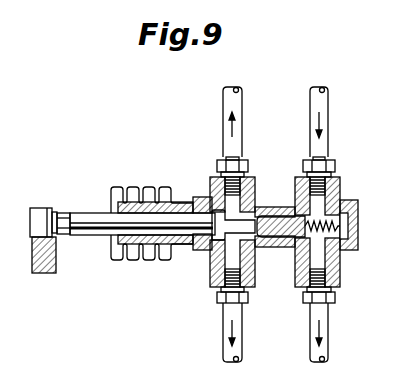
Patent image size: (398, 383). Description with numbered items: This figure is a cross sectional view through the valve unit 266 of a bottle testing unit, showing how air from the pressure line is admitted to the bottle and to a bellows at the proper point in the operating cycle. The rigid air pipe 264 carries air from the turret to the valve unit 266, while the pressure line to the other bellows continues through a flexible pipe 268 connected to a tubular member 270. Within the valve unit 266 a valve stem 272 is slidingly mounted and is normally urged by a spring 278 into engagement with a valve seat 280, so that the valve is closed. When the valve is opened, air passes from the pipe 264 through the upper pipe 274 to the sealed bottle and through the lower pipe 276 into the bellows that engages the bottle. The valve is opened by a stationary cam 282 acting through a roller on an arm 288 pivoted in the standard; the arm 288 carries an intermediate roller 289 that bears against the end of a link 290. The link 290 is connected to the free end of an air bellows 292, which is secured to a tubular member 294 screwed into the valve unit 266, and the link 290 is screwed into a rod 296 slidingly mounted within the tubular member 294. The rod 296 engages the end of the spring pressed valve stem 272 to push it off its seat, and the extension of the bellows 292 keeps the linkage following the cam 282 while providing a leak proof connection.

The rigid air pipe 264 is at (310, 113).
The valve unit 266 is at (209, 170).
The flexible pipe 268 is at (330, 343).
The tubular member 270 is at (392, 183).
The valve stem 272 is at (261, 213).
The upper pipe 274 is at (223, 105).
The lower pipe 276 is at (222, 340).
The spring 278 is at (358, 218).
The valve seat 280 is at (260, 256).
The stationary cam 282 is at (392, 253).
The arm 288 is at (44, 274).
The intermediate roller 289 is at (42, 208).
The link 290 is at (73, 222).
The air bellows 292 is at (120, 259).
The tubular member 294 is at (140, 250).
The rod 296 is at (132, 225).